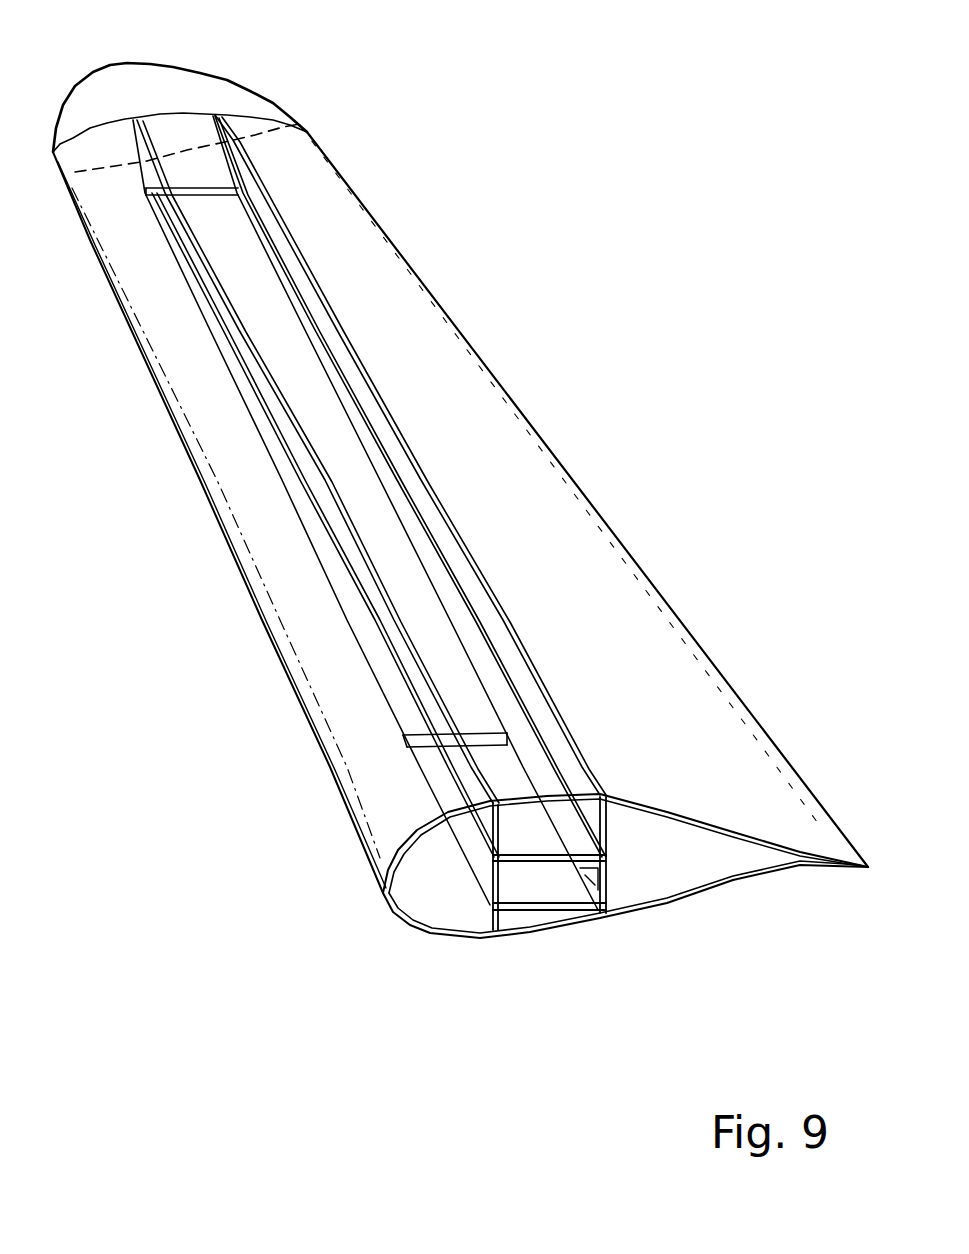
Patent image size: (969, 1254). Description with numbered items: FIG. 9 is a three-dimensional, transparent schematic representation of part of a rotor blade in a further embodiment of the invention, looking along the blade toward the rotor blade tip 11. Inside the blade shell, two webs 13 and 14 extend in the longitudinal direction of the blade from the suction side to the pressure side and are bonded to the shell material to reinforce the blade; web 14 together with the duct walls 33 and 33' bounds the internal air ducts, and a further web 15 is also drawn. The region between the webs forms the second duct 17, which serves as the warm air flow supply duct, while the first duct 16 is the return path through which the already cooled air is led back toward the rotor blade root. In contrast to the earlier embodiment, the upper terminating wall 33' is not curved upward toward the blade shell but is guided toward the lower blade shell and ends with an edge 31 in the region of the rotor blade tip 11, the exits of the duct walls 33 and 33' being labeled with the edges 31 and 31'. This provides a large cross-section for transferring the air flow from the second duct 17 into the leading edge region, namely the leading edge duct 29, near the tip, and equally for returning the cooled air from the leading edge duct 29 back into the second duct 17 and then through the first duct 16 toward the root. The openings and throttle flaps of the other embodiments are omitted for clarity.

The rotor blade tip 11 is at (167, 93).
The web 13 is at (466, 543).
The web 14 is at (315, 466).
The second shear web 15 is at (400, 677).
The first duct 16 is at (540, 875).
The second duct 17 is at (521, 826).
The leading edge duct 29 is at (423, 877).
The edge 31 is at (269, 148).
The edge 31' is at (375, 756).
The duct wall 33 is at (445, 904).
The upper terminating wall 33' is at (461, 847).